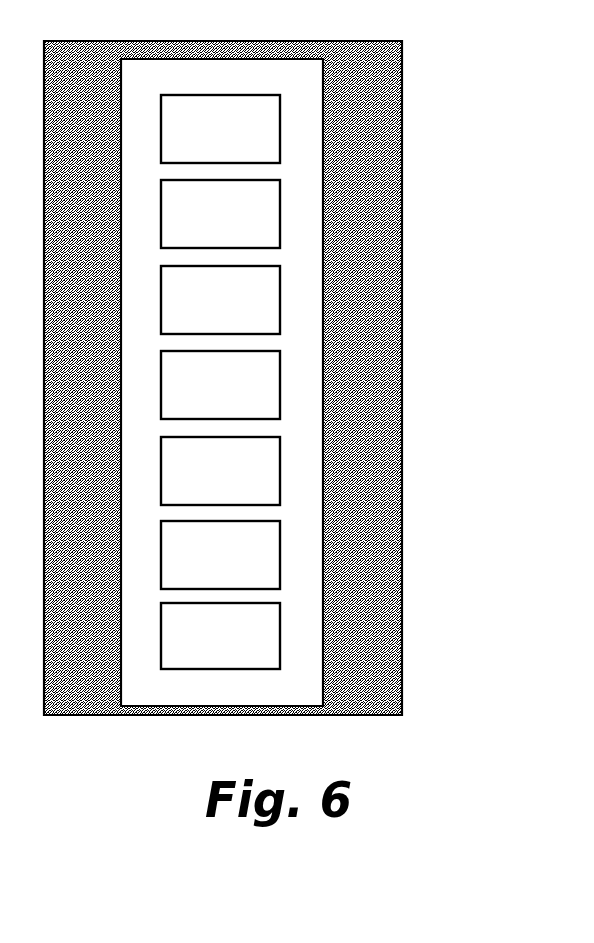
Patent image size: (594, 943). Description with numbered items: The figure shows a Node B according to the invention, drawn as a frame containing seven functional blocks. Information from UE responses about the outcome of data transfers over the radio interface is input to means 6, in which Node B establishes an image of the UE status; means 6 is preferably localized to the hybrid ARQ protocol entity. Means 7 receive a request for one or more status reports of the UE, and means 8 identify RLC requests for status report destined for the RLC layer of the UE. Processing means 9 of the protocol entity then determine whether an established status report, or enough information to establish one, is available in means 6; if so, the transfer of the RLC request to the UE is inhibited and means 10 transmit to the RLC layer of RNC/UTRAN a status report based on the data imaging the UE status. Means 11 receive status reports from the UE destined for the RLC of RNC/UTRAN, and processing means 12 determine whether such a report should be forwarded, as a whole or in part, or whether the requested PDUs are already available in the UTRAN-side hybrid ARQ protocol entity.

The means for establishing status image 6 is at (300, 126).
The means for receiving request for status report 7 is at (300, 210).
The means for identifying RLC requests for status report 8 is at (300, 295).
The processing means 9 is at (300, 379).
The means for transmitting status report 10 is at (300, 463).
The means for receiving status reports from UE 11 is at (300, 547).
The processing means 12 is at (300, 632).